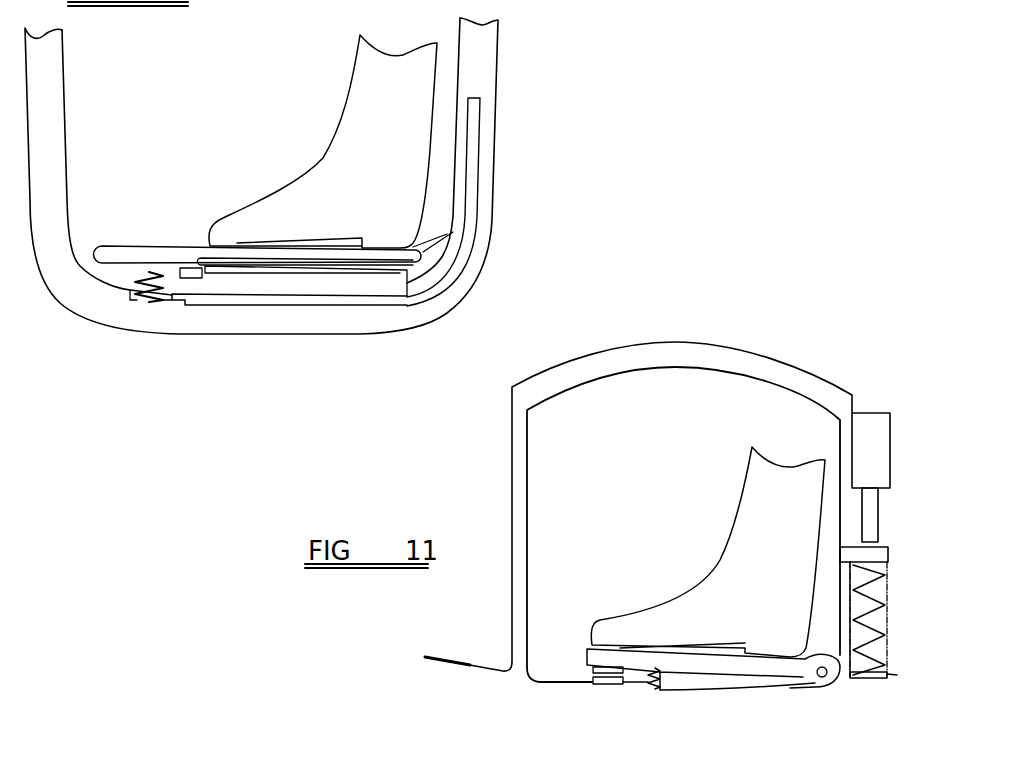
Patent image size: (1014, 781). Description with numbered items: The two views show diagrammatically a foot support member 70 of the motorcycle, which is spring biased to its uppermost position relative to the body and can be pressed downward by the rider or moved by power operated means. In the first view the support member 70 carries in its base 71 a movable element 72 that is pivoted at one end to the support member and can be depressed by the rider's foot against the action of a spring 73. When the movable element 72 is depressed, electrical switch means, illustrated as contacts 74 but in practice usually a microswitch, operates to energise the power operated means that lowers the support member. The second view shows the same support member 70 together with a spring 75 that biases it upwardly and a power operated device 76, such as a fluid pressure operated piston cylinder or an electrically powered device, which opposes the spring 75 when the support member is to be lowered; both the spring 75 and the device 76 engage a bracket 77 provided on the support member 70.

In FIG. 10, the support member 70 is at (518, 149).
In FIG. 11, the support member 70 is at (563, 658).
In FIG. 10, the base 71 is at (300, 334).
In FIG. 10, the movable element 72 is at (157, 248).
In FIG. 10, the spring 73 is at (130, 302).
In FIG. 10, the contacts 74 is at (188, 302).
In FIG. 11, the spring 75 is at (868, 678).
In FIG. 11, the electrically powered device 76 is at (878, 427).
In FIG. 11, the bracket 77 is at (852, 552).